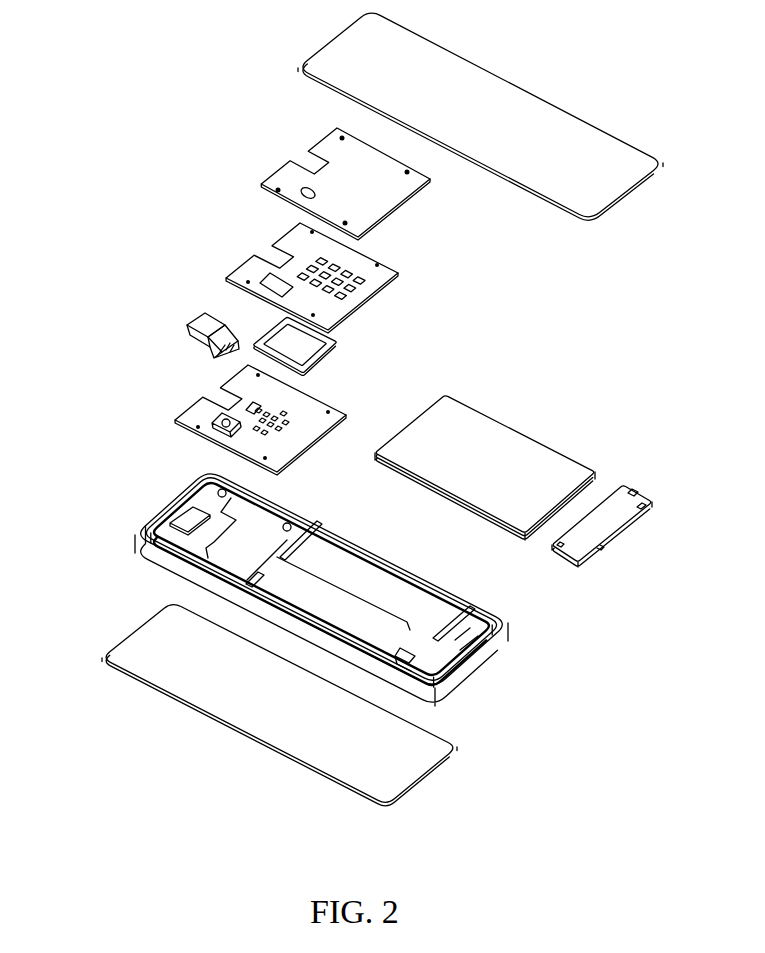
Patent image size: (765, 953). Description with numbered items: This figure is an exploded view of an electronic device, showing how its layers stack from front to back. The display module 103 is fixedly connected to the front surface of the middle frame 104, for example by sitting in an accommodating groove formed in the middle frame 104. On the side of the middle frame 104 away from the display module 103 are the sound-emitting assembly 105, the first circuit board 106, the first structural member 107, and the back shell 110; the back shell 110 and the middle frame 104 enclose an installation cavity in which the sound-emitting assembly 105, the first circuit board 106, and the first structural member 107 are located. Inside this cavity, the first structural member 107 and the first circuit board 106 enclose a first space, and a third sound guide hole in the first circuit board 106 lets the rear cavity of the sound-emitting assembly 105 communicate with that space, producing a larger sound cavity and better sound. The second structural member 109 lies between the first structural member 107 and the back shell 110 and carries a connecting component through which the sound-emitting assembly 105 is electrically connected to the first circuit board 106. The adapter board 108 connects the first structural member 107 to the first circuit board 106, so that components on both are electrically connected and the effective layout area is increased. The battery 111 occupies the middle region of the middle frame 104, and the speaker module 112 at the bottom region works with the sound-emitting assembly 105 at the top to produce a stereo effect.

The display module 103 is at (457, 747).
The middle frame 104 is at (158, 513).
The sound-emitting assembly 105 is at (187, 327).
The first circuit board 106 is at (183, 412).
The first structural member 107 is at (255, 258).
The adapter board 108 is at (338, 342).
The second structural member 109 is at (308, 150).
The back shell 110 is at (332, 40).
The battery 111 is at (547, 442).
The speaker module 112 is at (603, 552).